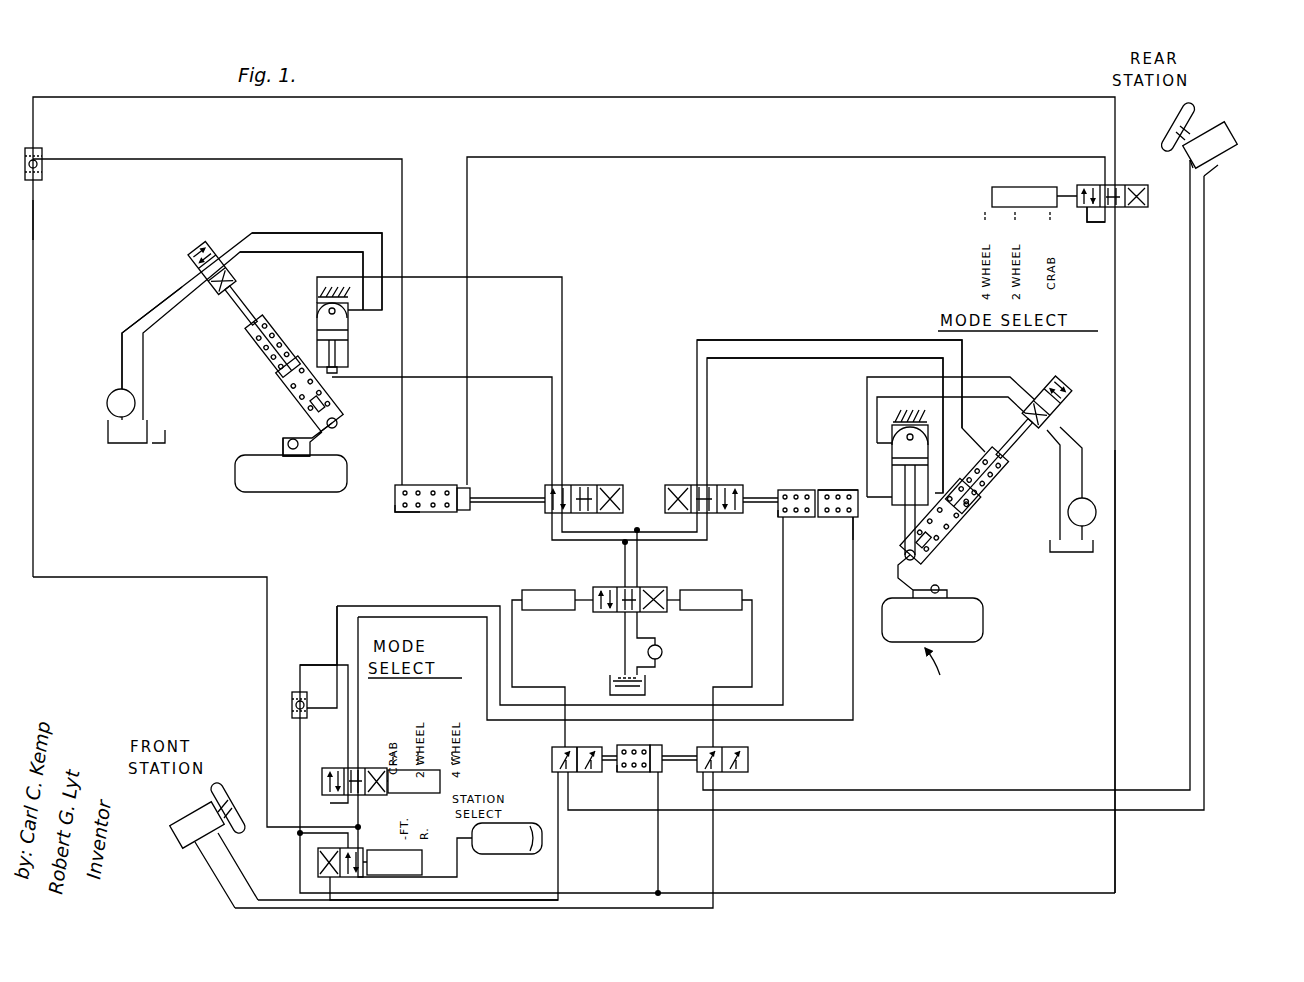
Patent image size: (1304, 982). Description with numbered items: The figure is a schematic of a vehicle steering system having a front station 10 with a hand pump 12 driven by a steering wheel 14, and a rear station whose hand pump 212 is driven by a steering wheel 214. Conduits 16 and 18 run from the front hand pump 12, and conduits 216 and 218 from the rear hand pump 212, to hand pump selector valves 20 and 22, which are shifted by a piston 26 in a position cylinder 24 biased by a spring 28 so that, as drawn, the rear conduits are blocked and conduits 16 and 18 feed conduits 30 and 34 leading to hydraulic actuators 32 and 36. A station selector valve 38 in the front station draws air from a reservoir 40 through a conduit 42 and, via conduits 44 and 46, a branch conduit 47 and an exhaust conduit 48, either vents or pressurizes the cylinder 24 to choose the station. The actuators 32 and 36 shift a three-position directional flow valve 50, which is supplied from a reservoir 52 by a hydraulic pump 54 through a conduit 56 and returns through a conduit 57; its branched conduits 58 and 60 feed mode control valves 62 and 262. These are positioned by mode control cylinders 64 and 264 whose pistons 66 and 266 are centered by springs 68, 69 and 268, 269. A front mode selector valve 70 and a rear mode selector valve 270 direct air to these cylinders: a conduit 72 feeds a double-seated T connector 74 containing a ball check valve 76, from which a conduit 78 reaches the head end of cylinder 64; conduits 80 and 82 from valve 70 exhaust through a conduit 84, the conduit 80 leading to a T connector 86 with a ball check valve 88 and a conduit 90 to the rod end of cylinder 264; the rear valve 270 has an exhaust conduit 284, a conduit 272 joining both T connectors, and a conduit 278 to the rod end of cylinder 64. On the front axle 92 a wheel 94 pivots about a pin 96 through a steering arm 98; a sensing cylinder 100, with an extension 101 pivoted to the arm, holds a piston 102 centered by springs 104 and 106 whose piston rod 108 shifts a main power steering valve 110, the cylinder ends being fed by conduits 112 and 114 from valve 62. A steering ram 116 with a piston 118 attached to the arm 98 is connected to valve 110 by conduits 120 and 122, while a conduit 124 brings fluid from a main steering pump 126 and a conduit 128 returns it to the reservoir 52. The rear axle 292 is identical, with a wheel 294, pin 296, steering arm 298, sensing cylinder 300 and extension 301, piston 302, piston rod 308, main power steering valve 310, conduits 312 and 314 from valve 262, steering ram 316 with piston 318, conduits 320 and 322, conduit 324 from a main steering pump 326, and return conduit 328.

The front station 10 is at (183, 812).
The hand pump 12 is at (173, 825).
The steering wheel 14 is at (234, 793).
The conduit 16 is at (192, 850).
The conduit 18 is at (215, 878).
The hand pump selector valve 20 is at (550, 762).
The hand pump selector valve 22 is at (748, 758).
The position cylinder 24 is at (600, 750).
The piston 26 is at (650, 748).
The spring 28 is at (630, 772).
The conduit 30 is at (512, 658).
The hydraulic actuator 32 is at (540, 590).
The conduit 34 is at (752, 662).
The hydraulic actuator 36 is at (725, 590).
The station selector valve 38 is at (318, 862).
The reservoir 40 is at (495, 854).
The conduit 42 is at (457, 866).
The conduit 44 is at (358, 827).
The conduit 46 is at (1115, 452).
The branch conduit 47 is at (660, 856).
The exhaust conduit 48 is at (300, 833).
The directional flow valve 50 is at (650, 587).
The reservoir 52 is at (160, 446).
The hydraulic pump 54 is at (662, 652).
The conduit 56 is at (640, 616).
The return conduit 57 is at (625, 622).
The conduit 58 is at (625, 567).
The conduit 60 is at (637, 528).
The mode control valve 62 is at (580, 485).
The mode control cylinder 64 is at (445, 485).
The piston 66 is at (462, 512).
The spring 68 is at (414, 512).
The spring 69 is at (472, 497).
The mode selector valve 70 is at (345, 768).
The conduit 72 is at (33, 220).
The double-seated T connector 74 is at (42, 158).
The ball check valve 76 is at (42, 170).
The conduit 78 is at (298, 159).
The conduit 80 is at (348, 722).
The conduit 82 is at (358, 633).
The exhaust conduit 84 is at (330, 803).
The double-seated T connector 86 is at (292, 700).
The ball check valve 88 is at (292, 706).
The conduit 90 is at (590, 707).
The front axle 92 is at (245, 500).
The steerable wheel 94 is at (322, 455).
The pivot pin 96 is at (293, 450).
The steering arm 98 is at (338, 428).
The sensing cylinder 100 is at (255, 366).
The extension 101 is at (290, 422).
The piston 102 is at (262, 386).
The spring 104 is at (247, 345).
The spring 106 is at (282, 405).
The piston rod 108 is at (243, 300).
The main power steering valve 110 is at (222, 245).
The conduit 112 is at (552, 410).
The conduit 114 is at (562, 340).
The steering ram 116 is at (348, 350).
The piston 118 is at (348, 328).
The conduit 120 is at (345, 233).
The conduit 122 is at (290, 250).
The conduit 124 is at (122, 345).
The main steering pump 126 is at (107, 403).
The return conduit 128 is at (188, 300).
The hand pump 212 is at (1218, 167).
The steering wheel 214 is at (1195, 112).
The conduit 216 is at (1190, 345).
The conduit 218 is at (1204, 330).
The mode control valve 262 is at (727, 485).
The mode control cylinder 264 is at (825, 518).
The piston 266 is at (826, 490).
The spring 268 is at (845, 518).
The spring 269 is at (782, 517).
The mode selector valve 270 is at (1085, 185).
The conduit 272 is at (150, 70).
The conduit 278 is at (467, 432).
The exhaust conduit 284 is at (1103, 224).
The rear axle 292 is at (949, 673).
The steerable wheel 294 is at (983, 628).
The pivot pin 296 is at (940, 590).
The steering arm 298 is at (925, 576).
The sensing cylinder 300 is at (968, 484).
The extension 301 is at (952, 540).
The piston 302 is at (962, 506).
The piston rod 308 is at (1000, 436).
The main power steering valve 310 is at (1070, 396).
The conduit 312 is at (734, 360).
The conduit 314 is at (800, 340).
The steering ram 316 is at (892, 503).
The piston 318 is at (892, 470).
The conduit 320 is at (1025, 387).
The conduit 322 is at (980, 377).
The conduit 324 is at (1085, 427).
The main steering pump 326 is at (1096, 512).
The return conduit 328 is at (1060, 482).